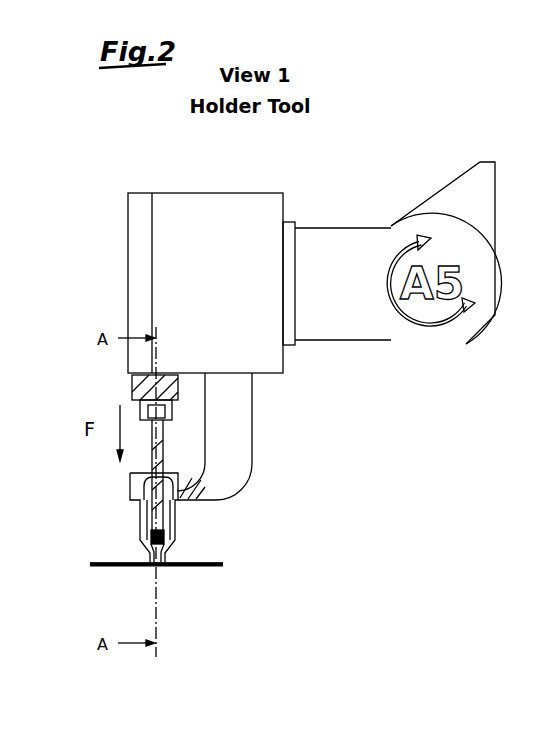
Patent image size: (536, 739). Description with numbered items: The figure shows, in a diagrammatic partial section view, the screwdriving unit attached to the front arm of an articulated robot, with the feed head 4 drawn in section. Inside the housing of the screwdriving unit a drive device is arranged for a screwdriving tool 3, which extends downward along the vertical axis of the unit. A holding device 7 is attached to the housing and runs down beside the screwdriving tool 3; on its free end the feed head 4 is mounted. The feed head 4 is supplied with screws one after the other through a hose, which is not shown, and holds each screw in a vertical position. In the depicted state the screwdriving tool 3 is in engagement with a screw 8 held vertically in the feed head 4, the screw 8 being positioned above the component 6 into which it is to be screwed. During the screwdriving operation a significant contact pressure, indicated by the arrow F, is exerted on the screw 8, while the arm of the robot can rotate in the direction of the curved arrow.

The screwdriving tool 3 is at (165, 445).
The feed head 4 is at (178, 512).
The component 6 is at (133, 567).
The holding device 7 is at (253, 422).
The screw 8 is at (203, 566).